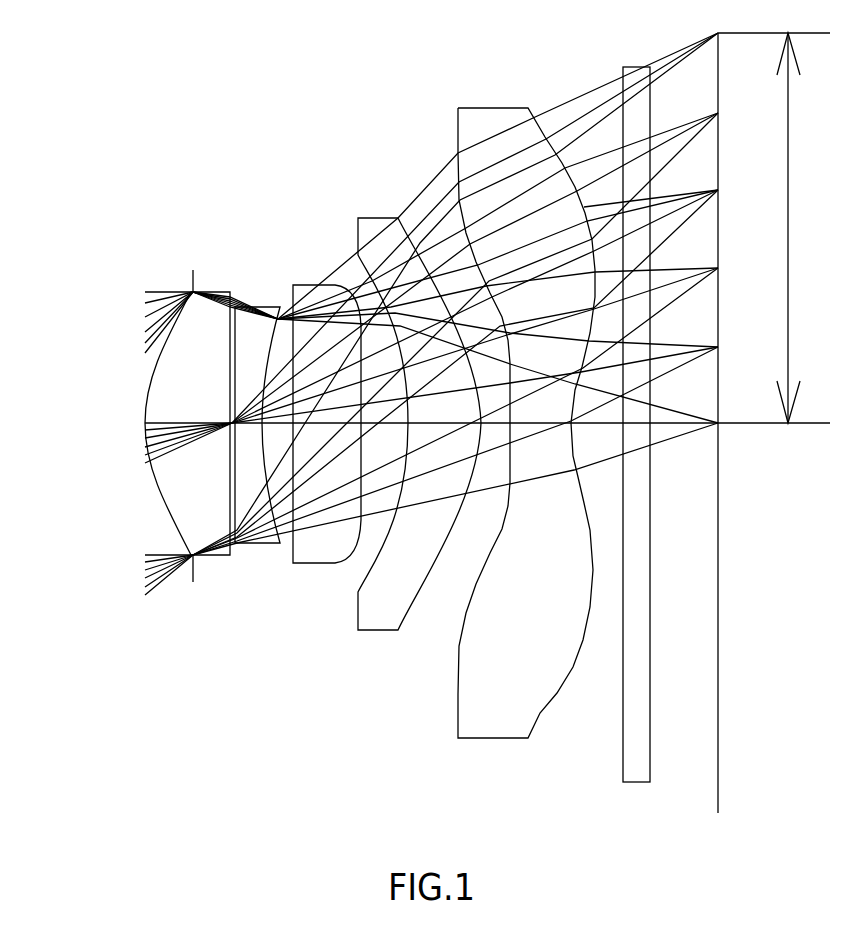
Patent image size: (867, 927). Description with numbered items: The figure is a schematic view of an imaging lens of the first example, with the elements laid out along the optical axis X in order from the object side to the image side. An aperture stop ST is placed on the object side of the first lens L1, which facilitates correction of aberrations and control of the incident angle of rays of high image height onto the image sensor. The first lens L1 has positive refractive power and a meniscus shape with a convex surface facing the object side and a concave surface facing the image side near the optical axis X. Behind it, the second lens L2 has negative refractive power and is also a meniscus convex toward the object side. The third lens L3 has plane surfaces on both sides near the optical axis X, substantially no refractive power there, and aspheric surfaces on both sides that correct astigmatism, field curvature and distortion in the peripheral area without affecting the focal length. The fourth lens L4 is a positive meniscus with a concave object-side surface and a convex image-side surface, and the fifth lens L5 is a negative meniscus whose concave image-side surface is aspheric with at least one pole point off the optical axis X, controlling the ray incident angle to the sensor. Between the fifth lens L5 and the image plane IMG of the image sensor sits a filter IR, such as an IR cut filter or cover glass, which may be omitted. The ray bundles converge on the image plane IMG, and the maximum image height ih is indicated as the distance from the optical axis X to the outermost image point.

The aperture stop ST is at (190, 278).
The first lens L1 is at (224, 290).
The second lens L2 is at (265, 305).
The third lens L3 is at (326, 283).
The fourth lens L4 is at (390, 216).
The fifth lens L5 is at (505, 106).
The filter IR is at (645, 66).
The image plane IMG is at (715, 780).
The optical axis X is at (152, 420).
The maximum image height ih is at (774, 228).